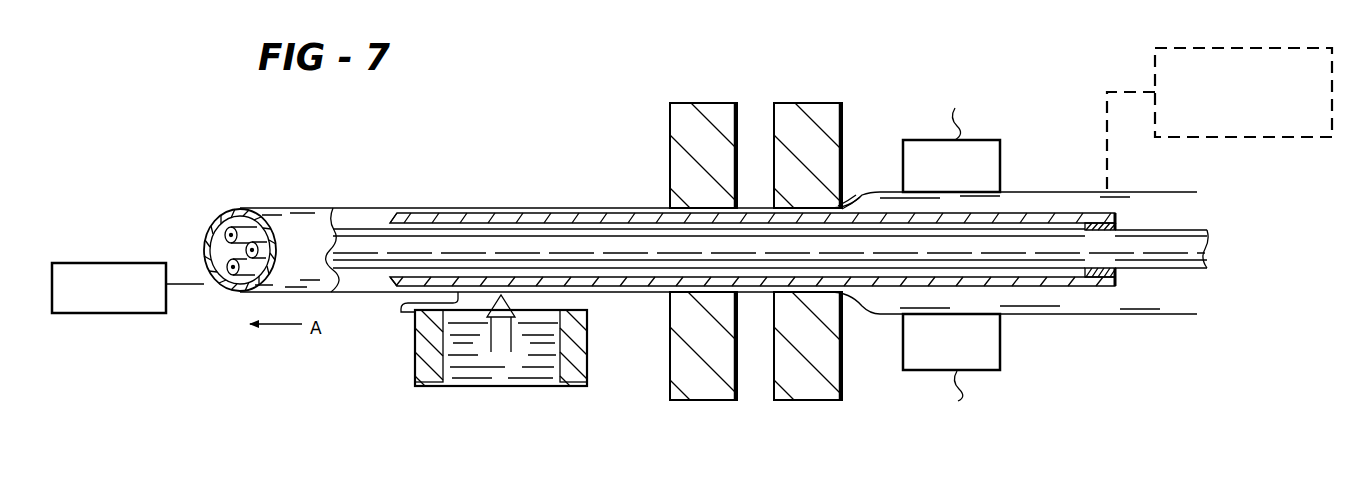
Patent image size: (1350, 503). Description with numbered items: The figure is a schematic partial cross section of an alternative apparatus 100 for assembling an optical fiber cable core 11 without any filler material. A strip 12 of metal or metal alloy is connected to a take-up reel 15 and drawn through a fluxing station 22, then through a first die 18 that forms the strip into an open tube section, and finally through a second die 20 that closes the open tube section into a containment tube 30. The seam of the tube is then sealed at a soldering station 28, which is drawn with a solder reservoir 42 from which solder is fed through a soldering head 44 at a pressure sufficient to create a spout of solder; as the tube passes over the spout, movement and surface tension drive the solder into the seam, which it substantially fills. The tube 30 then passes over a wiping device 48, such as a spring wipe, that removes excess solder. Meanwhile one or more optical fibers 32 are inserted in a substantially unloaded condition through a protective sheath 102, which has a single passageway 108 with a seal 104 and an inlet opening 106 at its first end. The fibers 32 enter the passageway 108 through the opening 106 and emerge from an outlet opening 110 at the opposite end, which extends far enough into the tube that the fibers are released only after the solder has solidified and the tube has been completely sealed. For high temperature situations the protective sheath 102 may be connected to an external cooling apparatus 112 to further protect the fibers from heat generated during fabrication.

The cable core 11 is at (250, 196).
The strip 12 is at (1058, 207).
The take-up reel 15 is at (93, 262).
The first die 18 is at (808, 103).
The second die 20 is at (690, 103).
The fluxing station 22 is at (954, 170).
The station 28 is at (524, 390).
The containment tube 30 is at (295, 224).
The optical fibers 32 is at (227, 265).
The flux container 42 is at (467, 370).
The soldering head 44 is at (513, 313).
The wiping device 48 is at (400, 312).
The apparatus 100 is at (529, 178).
The protective sheath 102 is at (603, 210).
The seal 104 is at (1118, 226).
The inlet opening 106 is at (1127, 283).
The passageway 108 is at (1038, 284).
The outlet opening 110 is at (376, 218).
The cooling apparatus 112 is at (1315, 138).